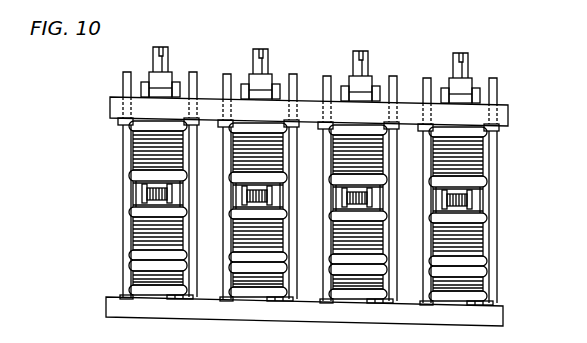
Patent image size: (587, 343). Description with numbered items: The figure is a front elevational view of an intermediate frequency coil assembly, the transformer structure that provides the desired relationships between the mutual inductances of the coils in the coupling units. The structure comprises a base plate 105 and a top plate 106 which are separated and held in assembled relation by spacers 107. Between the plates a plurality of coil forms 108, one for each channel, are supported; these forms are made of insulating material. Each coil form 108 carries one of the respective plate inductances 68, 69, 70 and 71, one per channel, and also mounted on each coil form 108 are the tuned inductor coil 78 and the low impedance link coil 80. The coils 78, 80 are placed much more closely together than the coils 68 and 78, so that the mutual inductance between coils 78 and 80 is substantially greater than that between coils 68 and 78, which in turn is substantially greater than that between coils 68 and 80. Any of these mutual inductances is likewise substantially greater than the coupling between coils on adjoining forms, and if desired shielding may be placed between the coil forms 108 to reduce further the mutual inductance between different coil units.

The plate inductance 68 is at (140, 154).
The plate inductance 69 is at (281, 158).
The plate inductance 70 is at (382, 161).
The plate inductance 71 is at (480, 161).
The tuned inductor coil 78 is at (134, 230).
The low impedance link coil 80 is at (133, 277).
The base plate 105 is at (504, 313).
The top plate 106 is at (508, 114).
The spacer 107 is at (123, 141).
The coil form 108 is at (135, 194).